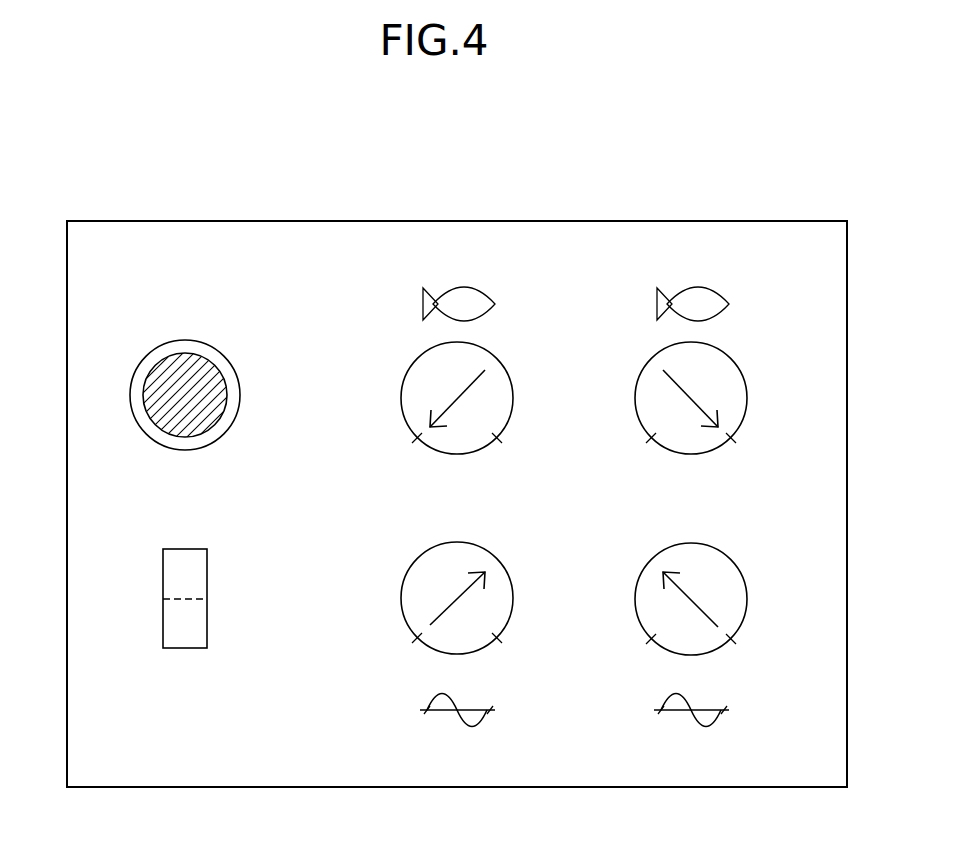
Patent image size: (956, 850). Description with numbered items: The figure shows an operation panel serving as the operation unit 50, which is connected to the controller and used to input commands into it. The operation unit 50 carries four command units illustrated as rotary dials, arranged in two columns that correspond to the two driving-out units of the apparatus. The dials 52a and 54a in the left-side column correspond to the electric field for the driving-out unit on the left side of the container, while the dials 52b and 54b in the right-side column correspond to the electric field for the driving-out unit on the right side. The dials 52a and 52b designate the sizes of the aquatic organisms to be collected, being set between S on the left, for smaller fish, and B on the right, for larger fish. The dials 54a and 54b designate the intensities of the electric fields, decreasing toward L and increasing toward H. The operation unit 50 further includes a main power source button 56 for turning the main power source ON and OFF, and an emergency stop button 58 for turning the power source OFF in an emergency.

The operation unit 50 is at (260, 221).
The dial 52a is at (505, 370).
The dial 52b is at (740, 370).
The dial 54a is at (508, 623).
The dial 54b is at (742, 623).
The main power source button 56 is at (163, 624).
The emergency stop button 58 is at (130, 395).